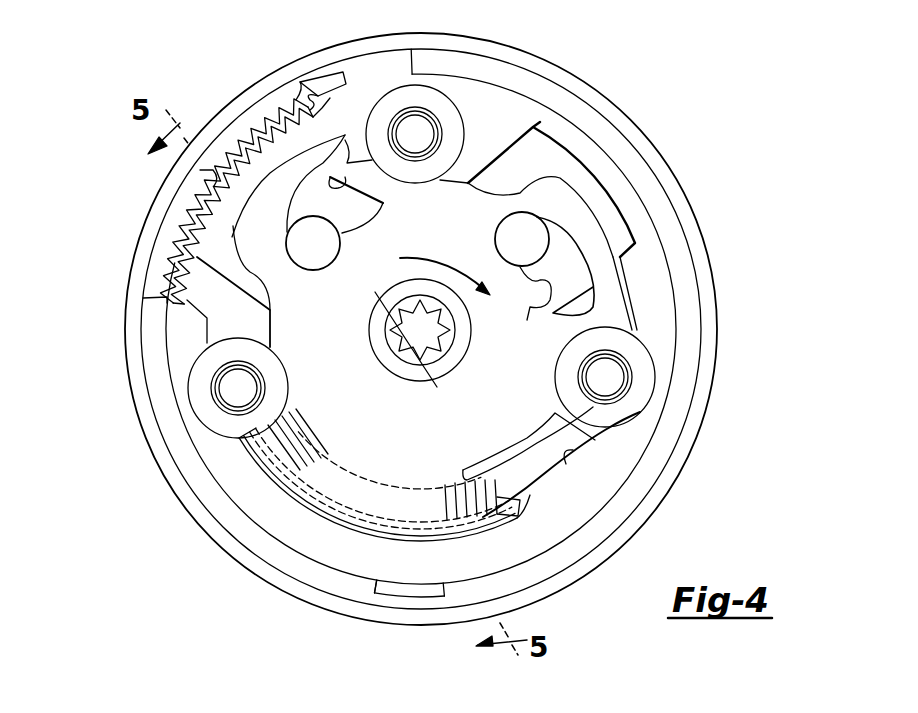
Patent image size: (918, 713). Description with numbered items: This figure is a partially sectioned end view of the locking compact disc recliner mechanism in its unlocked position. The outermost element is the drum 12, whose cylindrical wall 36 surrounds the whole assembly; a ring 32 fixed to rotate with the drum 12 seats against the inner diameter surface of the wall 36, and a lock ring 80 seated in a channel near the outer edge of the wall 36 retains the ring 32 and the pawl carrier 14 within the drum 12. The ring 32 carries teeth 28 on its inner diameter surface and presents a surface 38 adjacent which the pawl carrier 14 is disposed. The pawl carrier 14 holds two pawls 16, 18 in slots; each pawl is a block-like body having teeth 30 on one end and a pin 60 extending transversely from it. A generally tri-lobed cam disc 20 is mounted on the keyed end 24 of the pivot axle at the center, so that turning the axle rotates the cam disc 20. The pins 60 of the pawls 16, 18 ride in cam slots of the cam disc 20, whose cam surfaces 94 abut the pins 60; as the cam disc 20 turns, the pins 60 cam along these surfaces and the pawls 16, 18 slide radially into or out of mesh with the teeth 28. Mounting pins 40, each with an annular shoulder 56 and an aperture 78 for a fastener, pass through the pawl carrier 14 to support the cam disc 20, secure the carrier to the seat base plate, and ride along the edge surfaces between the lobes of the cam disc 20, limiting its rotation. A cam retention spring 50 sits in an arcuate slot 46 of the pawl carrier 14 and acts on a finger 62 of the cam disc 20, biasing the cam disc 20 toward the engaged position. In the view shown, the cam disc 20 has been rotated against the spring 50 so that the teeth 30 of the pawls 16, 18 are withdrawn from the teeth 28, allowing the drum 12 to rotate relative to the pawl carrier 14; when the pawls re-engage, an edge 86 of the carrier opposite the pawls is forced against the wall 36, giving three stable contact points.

The drum 12 is at (243, 92).
The pawl carrier 14 is at (418, 595).
The pawl 16 is at (493, 158).
The pawl 18 is at (212, 273).
The cam disc 20 is at (380, 455).
The keyed end 24 is at (450, 362).
The teeth 28 is at (150, 297).
The teeth 30 is at (172, 242).
The ring 32 is at (176, 246).
The cylindrical wall 36 is at (313, 100).
The surface 38 is at (213, 168).
The mounting pins 40 is at (657, 378).
The arcuate slot 46 is at (573, 450).
The cam retention spring 50 is at (285, 455).
The annular shoulders 56 is at (606, 345).
The pin 60 is at (318, 240).
The finger 62 is at (520, 500).
The apertures 78 is at (607, 387).
The lock ring 80 is at (571, 90).
The edge 86 is at (388, 584).
The cam surfaces 94 is at (348, 180).